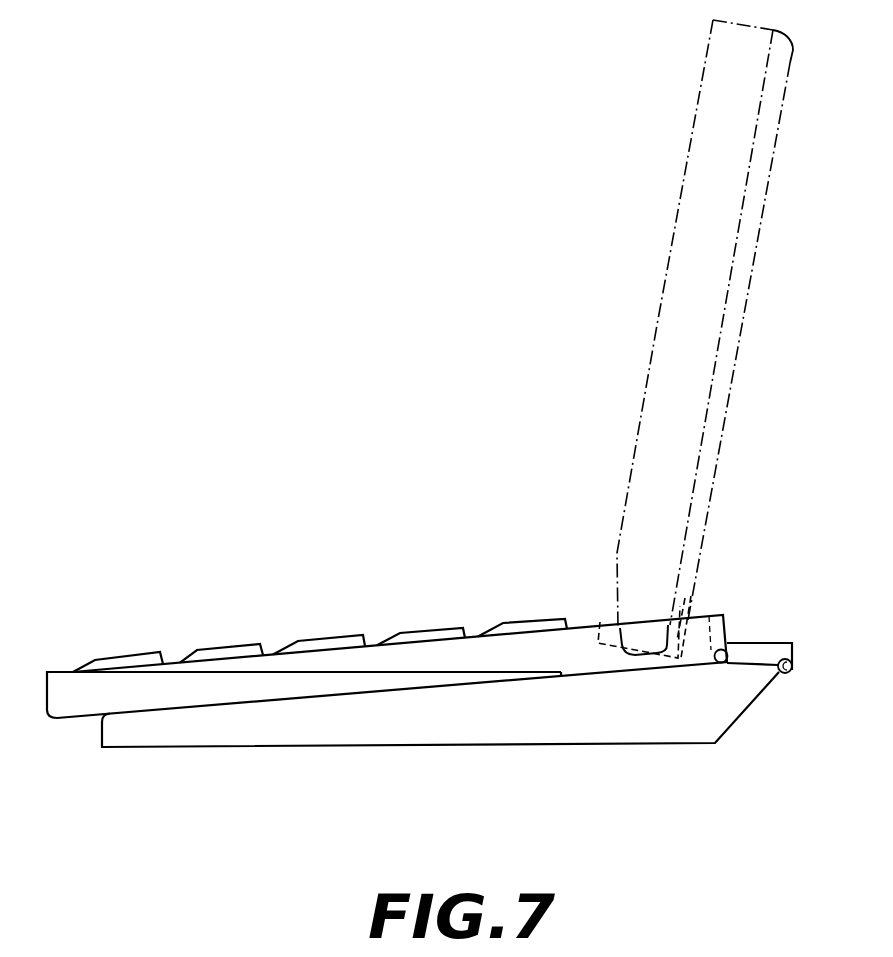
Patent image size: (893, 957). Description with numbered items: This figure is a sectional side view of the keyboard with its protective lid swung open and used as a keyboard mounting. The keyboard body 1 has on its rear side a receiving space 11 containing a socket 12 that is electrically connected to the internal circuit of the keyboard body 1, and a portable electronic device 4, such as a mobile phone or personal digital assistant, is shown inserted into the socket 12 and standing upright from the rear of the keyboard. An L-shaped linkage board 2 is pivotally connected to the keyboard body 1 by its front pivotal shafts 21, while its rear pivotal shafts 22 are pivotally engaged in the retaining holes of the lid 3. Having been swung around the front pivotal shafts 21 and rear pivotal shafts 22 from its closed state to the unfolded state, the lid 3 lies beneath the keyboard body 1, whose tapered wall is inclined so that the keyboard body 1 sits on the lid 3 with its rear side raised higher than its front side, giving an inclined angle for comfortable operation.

The keyboard body 1 is at (115, 688).
The linkage board 2 is at (765, 648).
The lid 3 is at (368, 725).
The portable electronic device 4 is at (677, 303).
The receiving space 11 is at (603, 620).
The socket 12 is at (680, 620).
The front pivotal shafts 21 is at (720, 665).
The rear pivotal shafts 22 is at (790, 676).